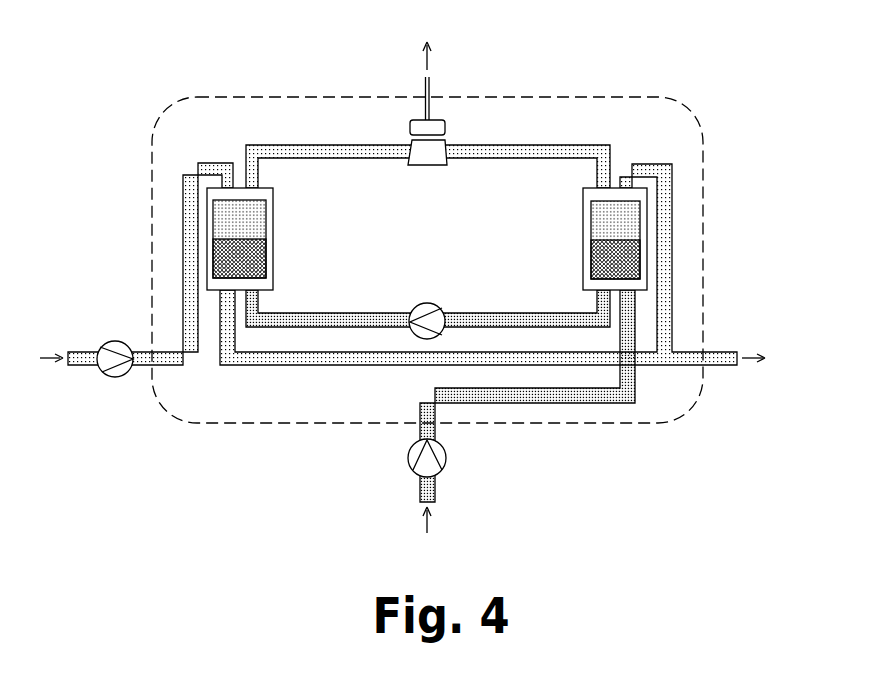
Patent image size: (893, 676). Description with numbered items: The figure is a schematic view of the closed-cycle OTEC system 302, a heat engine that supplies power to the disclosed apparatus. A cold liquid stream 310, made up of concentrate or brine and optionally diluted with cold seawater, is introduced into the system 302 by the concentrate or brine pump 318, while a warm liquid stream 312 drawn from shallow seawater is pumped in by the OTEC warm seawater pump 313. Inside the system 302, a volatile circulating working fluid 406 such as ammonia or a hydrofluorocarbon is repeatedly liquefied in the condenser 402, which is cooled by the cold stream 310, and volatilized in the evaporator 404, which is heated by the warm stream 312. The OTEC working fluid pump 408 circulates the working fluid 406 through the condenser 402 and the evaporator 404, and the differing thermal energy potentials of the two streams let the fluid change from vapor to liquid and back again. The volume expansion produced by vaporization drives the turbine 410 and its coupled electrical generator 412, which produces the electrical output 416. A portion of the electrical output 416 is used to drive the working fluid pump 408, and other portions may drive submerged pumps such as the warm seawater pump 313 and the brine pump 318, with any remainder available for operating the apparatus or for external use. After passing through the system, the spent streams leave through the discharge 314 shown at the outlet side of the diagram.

The closed-cycle OTEC system 302 is at (716, 82).
The cold liquid stream 310 is at (431, 525).
The warm liquid stream 312 is at (46, 362).
The OTEC warm seawater pump 313 is at (114, 378).
The outlet 314 is at (745, 363).
The concentrate or brine pump 318 is at (447, 460).
The condenser 402 is at (610, 236).
The evaporator 404 is at (248, 232).
The working fluid 406 is at (333, 152).
The OTEC working fluid pump 408 is at (427, 303).
The turbine 410 is at (427, 160).
The electrical generator 412 is at (445, 128).
The electrical output 416 is at (432, 62).